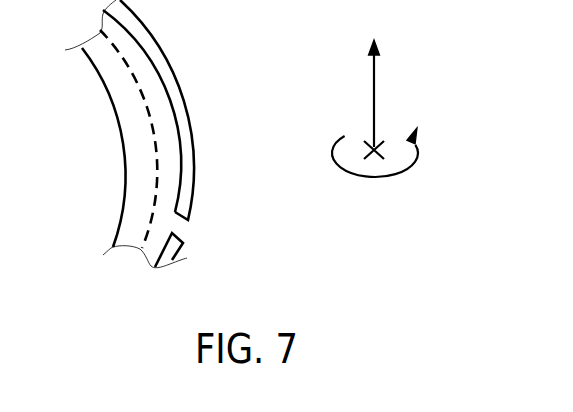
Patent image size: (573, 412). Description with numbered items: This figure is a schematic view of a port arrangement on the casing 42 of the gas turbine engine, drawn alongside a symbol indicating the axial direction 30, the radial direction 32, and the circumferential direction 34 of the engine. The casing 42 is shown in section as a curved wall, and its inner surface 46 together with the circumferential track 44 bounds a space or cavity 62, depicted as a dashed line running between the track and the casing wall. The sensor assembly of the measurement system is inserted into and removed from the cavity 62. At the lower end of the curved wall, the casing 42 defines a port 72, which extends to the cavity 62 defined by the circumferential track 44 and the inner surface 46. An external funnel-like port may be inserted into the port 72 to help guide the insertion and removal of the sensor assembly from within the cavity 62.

The axial direction 30 is at (377, 146).
The radial direction 32 is at (374, 80).
The circumferential direction 34 is at (387, 175).
The casing 42 is at (170, 80).
The circumferential track 44 is at (128, 105).
The inner surface 46 is at (150, 57).
The cavity 62 is at (158, 149).
The port 72 is at (173, 227).